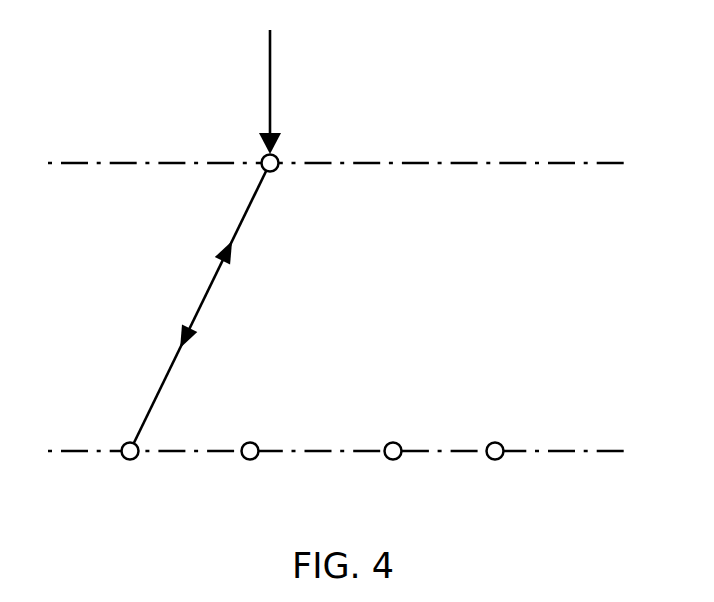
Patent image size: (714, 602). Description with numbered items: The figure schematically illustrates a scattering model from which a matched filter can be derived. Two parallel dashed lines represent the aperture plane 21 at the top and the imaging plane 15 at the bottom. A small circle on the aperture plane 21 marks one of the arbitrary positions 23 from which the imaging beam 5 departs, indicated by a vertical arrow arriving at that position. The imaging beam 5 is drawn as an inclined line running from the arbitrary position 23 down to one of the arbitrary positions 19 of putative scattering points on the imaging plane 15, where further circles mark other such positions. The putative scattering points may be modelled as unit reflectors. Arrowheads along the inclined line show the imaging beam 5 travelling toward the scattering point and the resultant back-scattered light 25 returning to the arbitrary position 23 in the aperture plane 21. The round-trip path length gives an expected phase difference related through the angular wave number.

The imaging beam 5 is at (220, 338).
The imaging plane 15 is at (57, 437).
The arbitrary positions of putative scattering points 19 is at (118, 467).
The aperture plane 21 is at (564, 178).
The arbitrary positions in the aperture plane 23 is at (288, 145).
The back-scattered light 25 is at (243, 257).